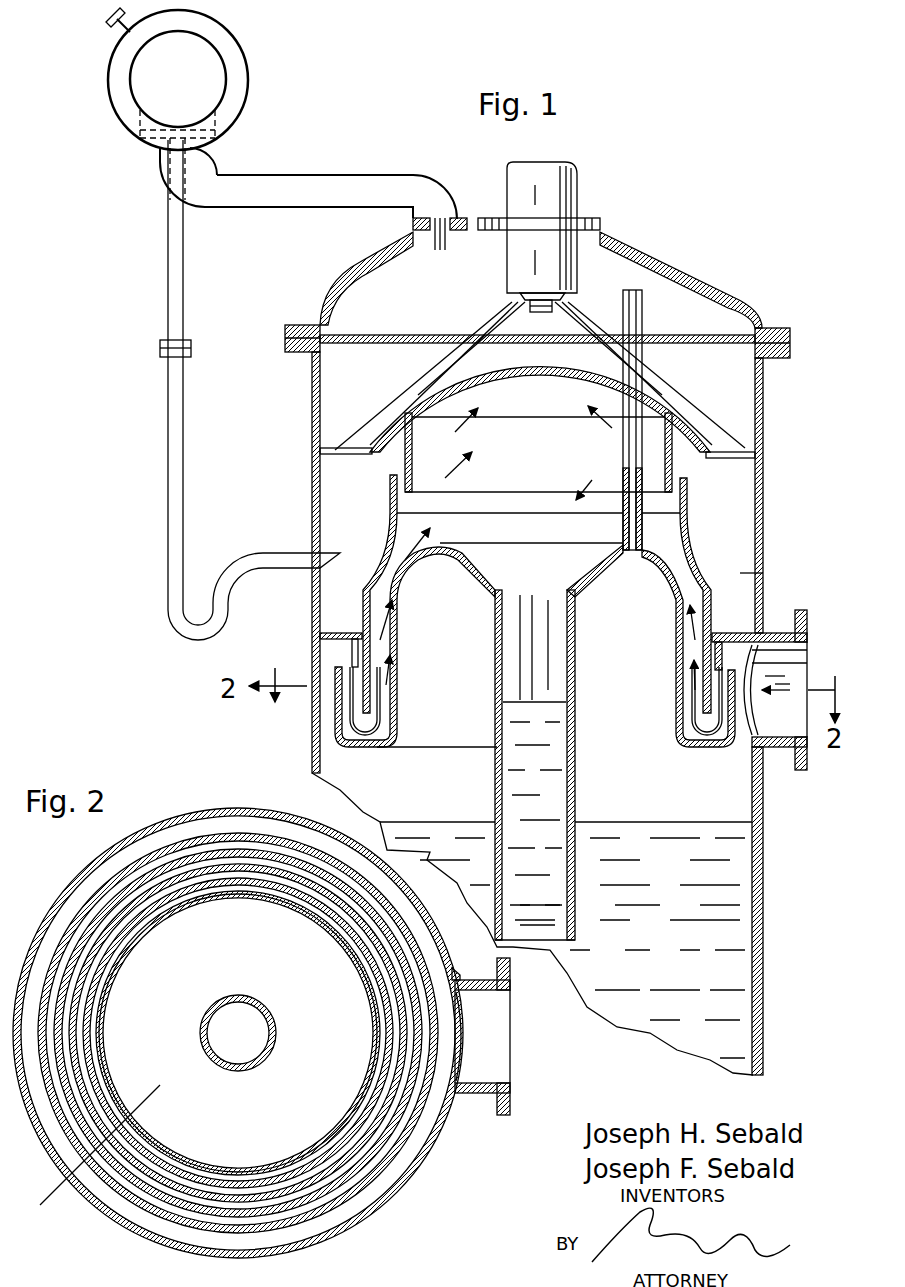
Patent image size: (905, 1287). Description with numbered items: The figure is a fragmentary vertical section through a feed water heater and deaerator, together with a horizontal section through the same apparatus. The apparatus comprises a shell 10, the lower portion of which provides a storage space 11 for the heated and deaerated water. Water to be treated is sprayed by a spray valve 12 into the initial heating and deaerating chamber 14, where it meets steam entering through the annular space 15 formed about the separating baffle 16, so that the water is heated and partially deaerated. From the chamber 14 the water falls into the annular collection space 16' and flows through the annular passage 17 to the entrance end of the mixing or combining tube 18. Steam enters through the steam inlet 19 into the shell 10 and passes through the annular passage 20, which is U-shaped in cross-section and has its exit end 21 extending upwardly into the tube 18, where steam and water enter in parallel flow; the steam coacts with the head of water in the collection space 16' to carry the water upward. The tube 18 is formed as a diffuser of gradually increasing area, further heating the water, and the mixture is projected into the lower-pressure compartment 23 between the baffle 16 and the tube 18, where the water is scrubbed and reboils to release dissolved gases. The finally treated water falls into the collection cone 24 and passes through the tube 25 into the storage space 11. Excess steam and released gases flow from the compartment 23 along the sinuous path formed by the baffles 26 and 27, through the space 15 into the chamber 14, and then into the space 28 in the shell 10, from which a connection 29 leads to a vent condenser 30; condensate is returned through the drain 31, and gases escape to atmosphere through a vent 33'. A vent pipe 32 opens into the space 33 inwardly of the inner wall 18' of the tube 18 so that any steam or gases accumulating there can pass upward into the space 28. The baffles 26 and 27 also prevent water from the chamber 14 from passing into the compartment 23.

In FIG. 1, the shell 10 is at (765, 492).
In FIG. 2, the shell 10 is at (240, 806).
In FIG. 1, the storage space 11 is at (740, 897).
In FIG. 2, the storage space 11 is at (322, 1228).
In FIG. 1, the spray valve 12 is at (572, 268).
In FIG. 1, the initial heating and deaerating chamber 14 is at (748, 430).
In FIG. 1, the annular space 15 is at (735, 456).
In FIG. 1, the separating baffle 16 is at (540, 409).
In FIG. 1, the annular collection space 16' is at (778, 572).
In FIG. 1, the annular passage 17 is at (352, 672).
In FIG. 2, the annular passage 17 is at (383, 1157).
In FIG. 1, the mixing or combining tube 18 is at (595, 609).
In FIG. 2, the mixing or combining tube 18 is at (240, 1033).
In FIG. 1, the inner wall 18' is at (535, 647).
In FIG. 2, the inner wall 18' is at (238, 1033).
In FIG. 1, the steam inlet 19 is at (782, 728).
In FIG. 2, the steam inlet 19 is at (498, 1055).
In FIG. 1, the annular passage 20 is at (737, 742).
In FIG. 2, the annular passage 20 is at (382, 1180).
In FIG. 1, the exit end 21 is at (695, 735).
In FIG. 2, the exit end 21 is at (362, 1120).
In FIG. 1, the compartment 23 is at (538, 474).
In FIG. 1, the collection cone 24 is at (585, 583).
In FIG. 1, the tube 25 is at (517, 655).
In FIG. 2, the tube 25 is at (274, 1014).
In FIG. 1, the baffle 26 is at (412, 446).
In FIG. 1, the baffle 27 is at (389, 496).
In FIG. 1, the space 28 is at (640, 268).
In FIG. 1, the connection 29 is at (320, 185).
In FIG. 1, the vent condenser 30 is at (212, 92).
In FIG. 1, the drain 31 is at (184, 418).
In FIG. 1, the vent pipe 32 is at (642, 323).
In FIG. 1, the space 33 is at (566, 843).
In FIG. 2, the space 33 is at (95, 1154).
In FIG. 1, the vent 33' is at (101, 49).